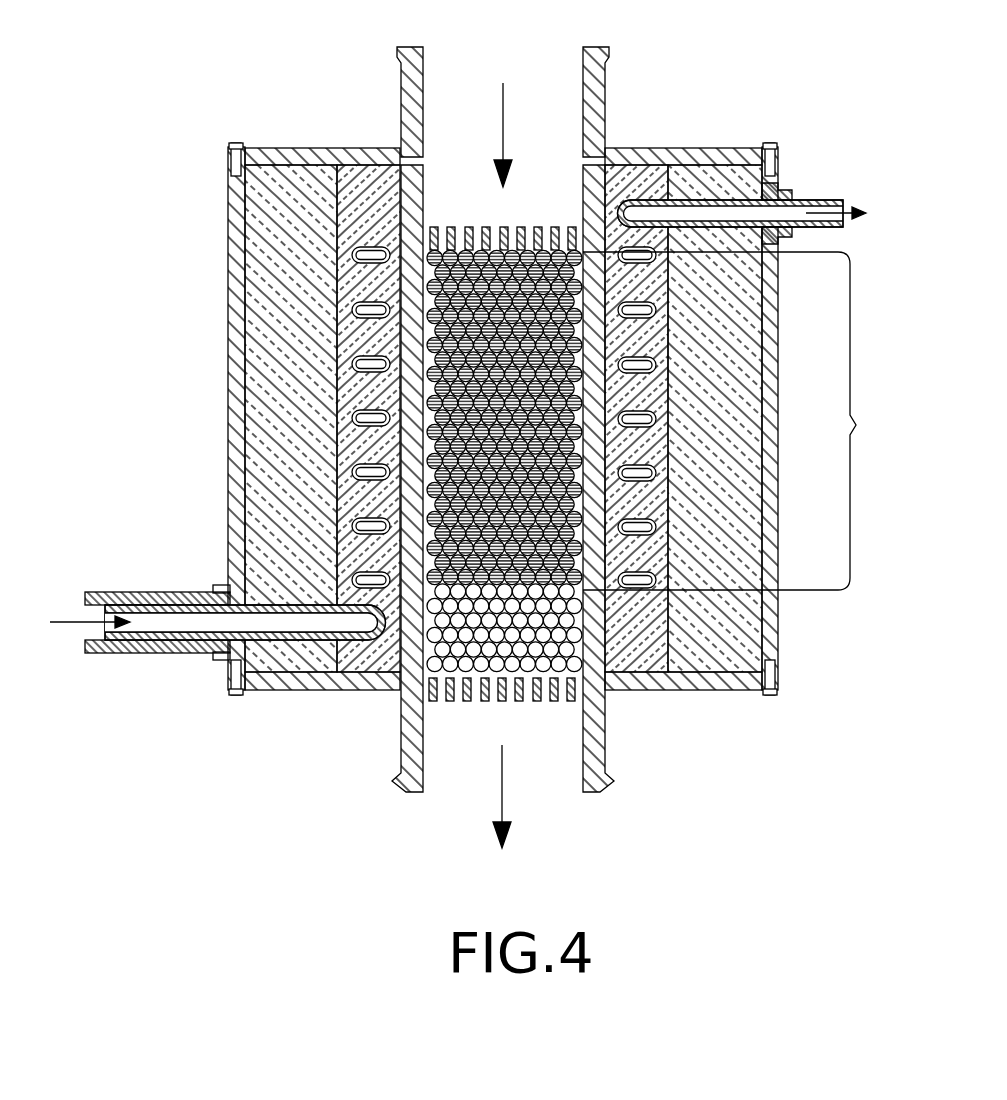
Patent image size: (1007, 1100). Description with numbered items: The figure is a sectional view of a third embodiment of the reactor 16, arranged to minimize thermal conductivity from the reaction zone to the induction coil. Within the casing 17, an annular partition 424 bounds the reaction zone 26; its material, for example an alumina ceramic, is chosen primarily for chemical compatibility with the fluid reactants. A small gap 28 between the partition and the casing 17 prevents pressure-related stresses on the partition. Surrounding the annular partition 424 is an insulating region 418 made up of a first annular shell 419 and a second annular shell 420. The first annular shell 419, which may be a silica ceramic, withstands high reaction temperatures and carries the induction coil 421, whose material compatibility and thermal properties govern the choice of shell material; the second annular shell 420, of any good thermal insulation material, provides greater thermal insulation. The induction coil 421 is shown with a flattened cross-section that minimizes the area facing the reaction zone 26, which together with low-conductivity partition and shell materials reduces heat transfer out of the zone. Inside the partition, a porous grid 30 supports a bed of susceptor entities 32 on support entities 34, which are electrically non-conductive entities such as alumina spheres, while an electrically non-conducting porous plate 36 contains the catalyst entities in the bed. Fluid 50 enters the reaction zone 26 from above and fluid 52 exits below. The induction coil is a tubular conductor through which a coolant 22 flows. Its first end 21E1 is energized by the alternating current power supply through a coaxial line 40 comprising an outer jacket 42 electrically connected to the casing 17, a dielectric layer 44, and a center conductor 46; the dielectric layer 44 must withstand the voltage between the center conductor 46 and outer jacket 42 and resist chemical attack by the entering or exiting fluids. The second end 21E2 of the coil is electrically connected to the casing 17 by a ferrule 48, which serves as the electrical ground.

The reactor 16 is at (204, 60).
The casing 17 is at (236, 222).
The coolant 22 is at (80, 622).
The reaction zone 26 is at (742, 421).
The gap 28 is at (400, 680).
The porous grid 30 is at (488, 700).
The susceptor entities 32 is at (509, 240).
The support entities 34 is at (600, 695).
The porous plate 36 is at (488, 228).
The coaxial line 40 is at (219, 657).
The outer jacket 42 is at (188, 652).
The dielectric layer 44 is at (166, 645).
The center conductor 46 is at (150, 612).
The ferrule 48 is at (806, 194).
The fluid entering reaction zone 50 is at (503, 103).
The fluid exiting reaction zone 52 is at (503, 800).
The insulating region 418 is at (400, 147).
The first annular shell 419 is at (370, 195).
The second annular shell 420 is at (278, 248).
The induction coil 421 is at (355, 366).
The annular partition 424 is at (608, 180).
The first end of induction coil 21E1 is at (245, 636).
The second end of induction coil 21E2 is at (708, 200).